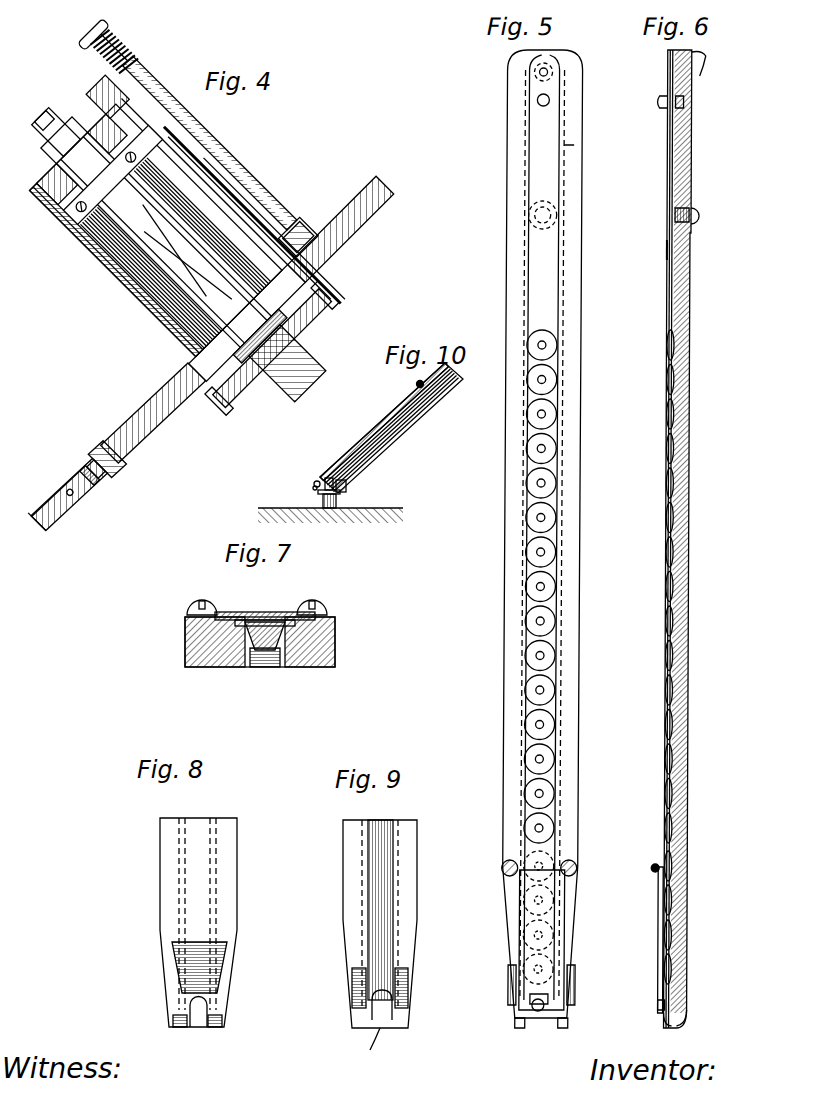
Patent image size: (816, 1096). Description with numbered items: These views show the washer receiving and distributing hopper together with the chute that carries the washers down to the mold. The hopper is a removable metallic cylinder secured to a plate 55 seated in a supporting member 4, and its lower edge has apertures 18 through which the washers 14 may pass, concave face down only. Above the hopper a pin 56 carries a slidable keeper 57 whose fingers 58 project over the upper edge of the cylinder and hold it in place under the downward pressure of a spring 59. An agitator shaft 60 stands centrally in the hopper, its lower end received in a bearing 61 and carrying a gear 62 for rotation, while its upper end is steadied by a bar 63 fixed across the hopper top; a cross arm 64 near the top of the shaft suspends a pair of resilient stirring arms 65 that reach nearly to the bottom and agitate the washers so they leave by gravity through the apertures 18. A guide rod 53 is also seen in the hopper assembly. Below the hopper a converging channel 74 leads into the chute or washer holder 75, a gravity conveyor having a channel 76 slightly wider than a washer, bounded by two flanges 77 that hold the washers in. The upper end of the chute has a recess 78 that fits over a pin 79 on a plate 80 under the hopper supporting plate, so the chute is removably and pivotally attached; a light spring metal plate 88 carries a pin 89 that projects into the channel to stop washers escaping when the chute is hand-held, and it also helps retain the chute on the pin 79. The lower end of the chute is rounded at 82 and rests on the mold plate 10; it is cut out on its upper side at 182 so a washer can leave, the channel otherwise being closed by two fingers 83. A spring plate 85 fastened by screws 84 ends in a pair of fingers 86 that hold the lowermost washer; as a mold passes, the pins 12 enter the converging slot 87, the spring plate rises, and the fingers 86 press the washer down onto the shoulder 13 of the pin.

In FIG. 4, the supporting member 4 is at (378, 208).
In FIG. 10, the mold plate 10 is at (280, 508).
In FIG. 10, the pins or studs 12 is at (320, 492).
In FIG. 10, the shoulders 13 is at (338, 494).
In FIG. 10, the washers 14 is at (316, 482).
In FIG. 7, the washers 14 is at (262, 622).
In FIG. 5, the washers 14 is at (560, 585).
In FIG. 6, the washers 14 is at (670, 482).
In FIG. 4, the apertures 18 is at (318, 275).
In FIG. 4, the rod 53 is at (245, 192).
In FIG. 4, the plate 55 is at (285, 238).
In FIG. 4, the pin 56 is at (222, 170).
In FIG. 4, the slidable keeper 57 is at (158, 80).
In FIG. 4, the fingers 58 is at (100, 102).
In FIG. 4, the spring 59 is at (118, 42).
In FIG. 4, the agitator shaft 60 is at (140, 278).
In FIG. 4, the bearing 61 is at (300, 300).
In FIG. 4, the gear 62 is at (330, 325).
In FIG. 4, the bar 63 is at (62, 138).
In FIG. 4, the cross arm 64 is at (182, 142).
In FIG. 4, the stirring arms 65 is at (92, 247).
In FIG. 4, the converging channel 74 is at (176, 386).
In FIG. 4, the chute or washer holder 75 is at (78, 498).
In FIG. 10, the chute or washer holder 75 is at (440, 392).
In FIG. 7, the chute or washer holder 75 is at (336, 655).
In FIG. 8, the chute or washer holder 75 is at (237, 862).
In FIG. 9, the chute or washer holder 75 is at (344, 902).
In FIG. 5, the chute or washer holder 75 is at (584, 296).
In FIG. 6, the chute or washer holder 75 is at (693, 297).
In FIG. 7, the channel 76 is at (295, 620).
In FIG. 9, the channel 76 is at (378, 848).
In FIG. 5, the channel 76 is at (540, 276).
In FIG. 6, the channel 76 is at (690, 278).
In FIG. 10, the flanges 77 is at (452, 382).
In FIG. 7, the flanges 77 is at (240, 612).
In FIG. 9, the flanges 77 is at (362, 938).
In FIG. 5, the flanges 77 is at (530, 306).
In FIG. 6, the flanges 77 is at (668, 247).
In FIG. 5, the recess 78 is at (534, 74).
In FIG. 6, the recess 78 is at (706, 57).
In FIG. 4, the pin 79 is at (108, 428).
In FIG. 4, the plate 80 is at (160, 425).
In FIG. 8, the rounded lower end 82 is at (170, 1030).
In FIG. 6, the rounded lower end 82 is at (691, 1018).
In FIG. 9, the fingers 83 is at (375, 1028).
In FIG. 5, the fingers 83 is at (544, 1012).
In FIG. 6, the fingers 83 is at (668, 1026).
In FIG. 10, the screws 84 is at (416, 382).
In FIG. 7, the screws 84 is at (190, 608).
In FIG. 5, the screws 84 is at (507, 868).
In FIG. 6, the screws 84 is at (658, 864).
In FIG. 10, the spring plate 85 is at (395, 421).
In FIG. 5, the spring plate 85 is at (571, 913).
In FIG. 6, the spring plate 85 is at (662, 950).
In FIG. 10, the fingers 86 is at (330, 476).
In FIG. 5, the fingers 86 is at (521, 1022).
In FIG. 6, the fingers 86 is at (662, 1002).
In FIG. 10, the converging guideway or slot 87 is at (345, 492).
In FIG. 7, the converging guideway or slot 87 is at (272, 666).
In FIG. 8, the converging guideway or slot 87 is at (215, 960).
In FIG. 4, the light spring metal plate 88 is at (110, 474).
In FIG. 5, the light spring metal plate 88 is at (566, 145).
In FIG. 6, the light spring metal plate 88 is at (692, 150).
In FIG. 4, the pin 89 is at (98, 448).
In FIG. 5, the pin 89 is at (550, 100).
In FIG. 6, the pin 89 is at (692, 100).
In FIG. 9, the cut out or aperture 182 is at (352, 1008).